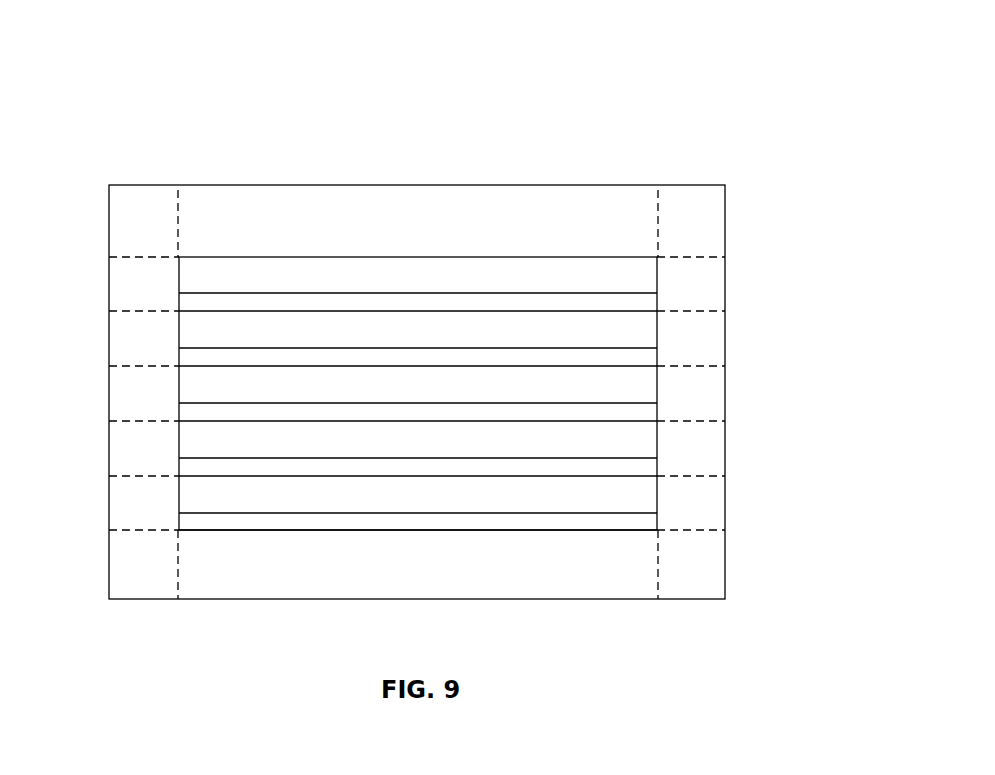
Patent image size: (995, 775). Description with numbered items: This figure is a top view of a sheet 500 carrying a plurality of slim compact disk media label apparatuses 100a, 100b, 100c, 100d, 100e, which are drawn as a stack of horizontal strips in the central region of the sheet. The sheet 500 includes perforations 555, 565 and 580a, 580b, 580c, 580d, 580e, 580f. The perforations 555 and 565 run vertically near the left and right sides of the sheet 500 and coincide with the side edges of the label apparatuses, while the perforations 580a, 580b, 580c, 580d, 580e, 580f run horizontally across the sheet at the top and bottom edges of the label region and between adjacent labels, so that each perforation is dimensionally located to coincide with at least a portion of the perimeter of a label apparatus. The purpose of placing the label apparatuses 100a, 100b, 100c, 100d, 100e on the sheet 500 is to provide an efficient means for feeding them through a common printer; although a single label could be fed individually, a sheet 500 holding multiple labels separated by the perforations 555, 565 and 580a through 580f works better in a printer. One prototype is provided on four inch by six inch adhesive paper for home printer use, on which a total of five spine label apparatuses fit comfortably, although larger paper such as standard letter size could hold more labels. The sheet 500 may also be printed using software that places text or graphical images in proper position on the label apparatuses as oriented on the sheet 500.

The sheet 500 is at (585, 101).
The perforation 555 is at (178, 215).
The perforation 565 is at (658, 217).
The perforation 580a is at (137, 257).
The perforation 580b is at (137, 311).
The perforation 580c is at (137, 366).
The perforation 580d is at (137, 421).
The perforation 580e is at (137, 476).
The perforation 580f is at (137, 530).
The slim compact disk media label apparatus 100a is at (690, 284).
The slim compact disk media label apparatus 100b is at (690, 339).
The slim compact disk media label apparatus 100c is at (690, 394).
The slim compact disk media label apparatus 100d is at (690, 449).
The slim compact disk media label apparatus 100e is at (690, 504).